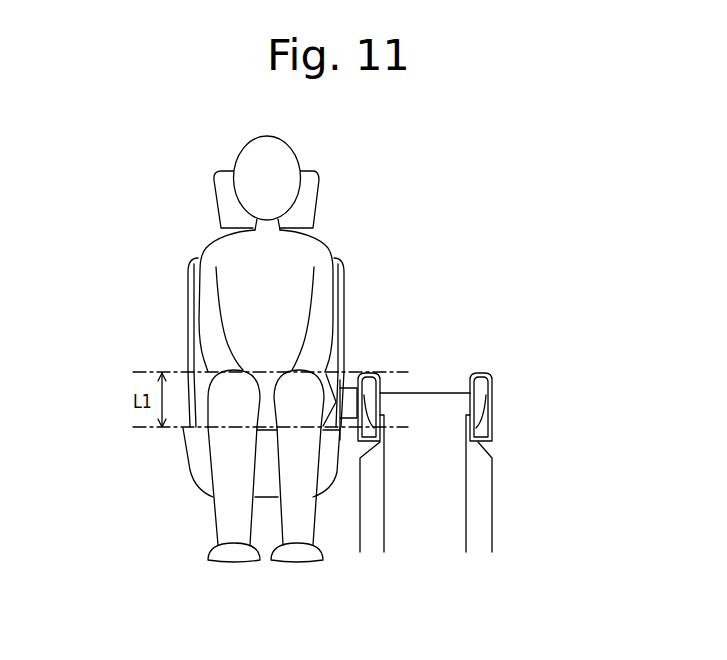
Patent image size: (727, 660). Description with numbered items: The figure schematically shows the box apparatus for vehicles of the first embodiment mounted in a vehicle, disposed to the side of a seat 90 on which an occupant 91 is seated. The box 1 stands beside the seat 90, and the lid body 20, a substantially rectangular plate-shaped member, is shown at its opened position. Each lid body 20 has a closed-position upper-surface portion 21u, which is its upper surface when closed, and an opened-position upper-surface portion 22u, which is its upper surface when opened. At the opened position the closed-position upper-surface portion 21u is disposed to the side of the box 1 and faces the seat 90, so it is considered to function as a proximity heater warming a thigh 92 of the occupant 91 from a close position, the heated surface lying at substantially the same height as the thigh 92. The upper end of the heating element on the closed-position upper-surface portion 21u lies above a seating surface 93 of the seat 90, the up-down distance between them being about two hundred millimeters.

The box 1 is at (495, 488).
The lid body 20 is at (493, 418).
The closed-position upper-surface portion 21u is at (368, 371).
The opened-position upper-surface portion 22u is at (381, 370).
The seat 90 is at (197, 368).
The occupant 91 is at (212, 248).
The thigh 92 is at (347, 382).
The seating surface 93 is at (199, 429).